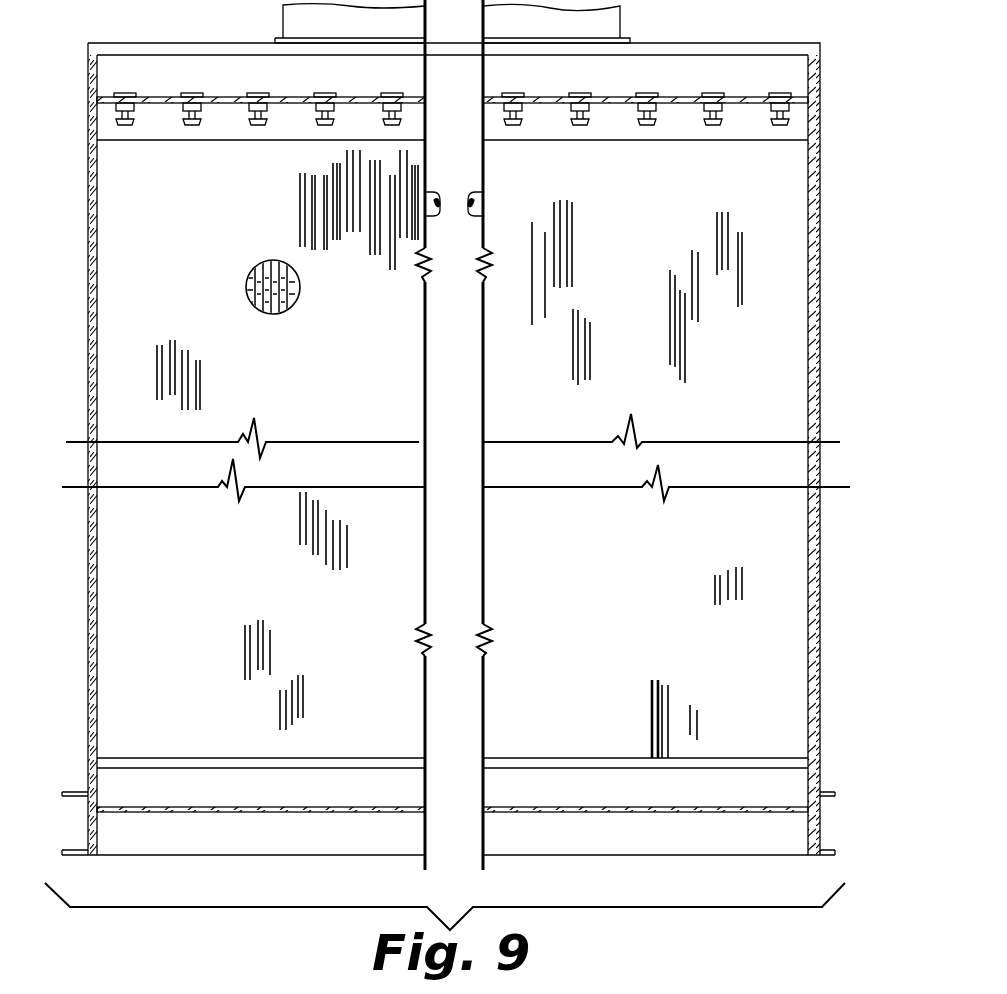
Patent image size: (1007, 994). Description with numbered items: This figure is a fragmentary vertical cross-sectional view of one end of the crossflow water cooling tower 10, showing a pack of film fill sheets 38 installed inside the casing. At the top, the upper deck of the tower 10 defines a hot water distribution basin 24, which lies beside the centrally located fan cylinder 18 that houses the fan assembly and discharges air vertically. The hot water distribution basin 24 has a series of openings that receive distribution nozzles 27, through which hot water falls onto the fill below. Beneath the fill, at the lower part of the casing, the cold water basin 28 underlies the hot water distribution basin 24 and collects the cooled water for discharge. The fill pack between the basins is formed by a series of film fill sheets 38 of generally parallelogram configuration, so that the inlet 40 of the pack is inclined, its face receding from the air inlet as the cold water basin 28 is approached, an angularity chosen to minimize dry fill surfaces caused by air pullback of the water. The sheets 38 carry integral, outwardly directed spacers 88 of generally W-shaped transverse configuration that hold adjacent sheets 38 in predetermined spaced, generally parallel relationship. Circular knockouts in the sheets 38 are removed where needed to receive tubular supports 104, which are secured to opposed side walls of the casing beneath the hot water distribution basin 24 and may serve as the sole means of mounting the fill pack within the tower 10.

The crossflow water cooling tower 10 is at (840, 54).
The fan cylinder 18 is at (622, 18).
The hot water distribution basin 24 is at (157, 97).
The distribution nozzle 27 is at (647, 93).
The cold water basin 28 is at (105, 812).
The film fill sheet 38 is at (90, 752).
The inlet of the pack 40 is at (452, 454).
The spacer 88 is at (252, 309).
The tubular support 104 is at (473, 200).